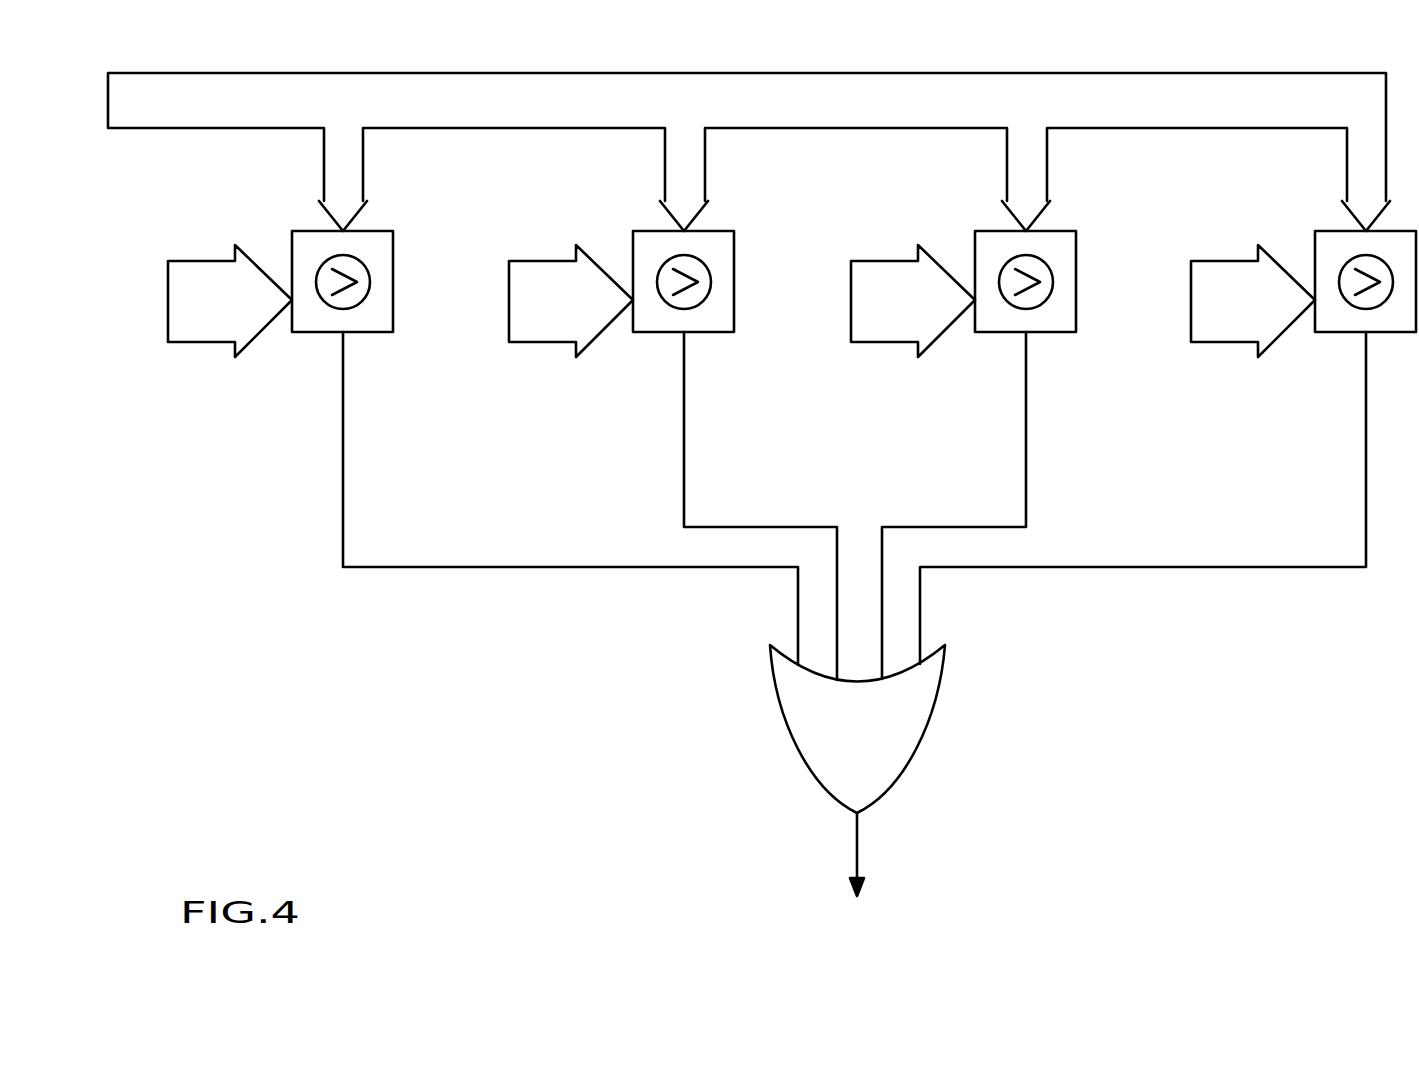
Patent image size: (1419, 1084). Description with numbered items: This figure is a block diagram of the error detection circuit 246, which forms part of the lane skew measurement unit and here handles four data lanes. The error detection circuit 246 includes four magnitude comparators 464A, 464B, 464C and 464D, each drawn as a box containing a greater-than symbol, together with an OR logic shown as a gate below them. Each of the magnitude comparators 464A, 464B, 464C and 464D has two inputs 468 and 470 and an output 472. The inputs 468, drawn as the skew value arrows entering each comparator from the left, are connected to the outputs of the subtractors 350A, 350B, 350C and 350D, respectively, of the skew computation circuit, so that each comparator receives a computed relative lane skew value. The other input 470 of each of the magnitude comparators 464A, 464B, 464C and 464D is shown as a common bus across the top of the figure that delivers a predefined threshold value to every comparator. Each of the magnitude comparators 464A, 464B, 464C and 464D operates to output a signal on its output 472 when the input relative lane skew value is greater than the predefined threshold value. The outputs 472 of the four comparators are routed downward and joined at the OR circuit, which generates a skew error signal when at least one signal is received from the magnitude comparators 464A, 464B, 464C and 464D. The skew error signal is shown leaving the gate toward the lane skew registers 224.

The input 470 is at (153, 74).
The subtractor 350A is at (155, 318).
The subtractor 350B is at (496, 318).
The subtractor 350C is at (838, 318).
The subtractor 350D is at (1178, 318).
The input 468 is at (208, 261).
The magnitude comparator 464A is at (315, 333).
The magnitude comparator 464B is at (656, 333).
The magnitude comparator 464C is at (998, 333).
The magnitude comparator 464D is at (1338, 333).
The output 472 is at (343, 479).
The error detection circuit 246 is at (263, 805).
The lane skew registers 224 is at (878, 941).